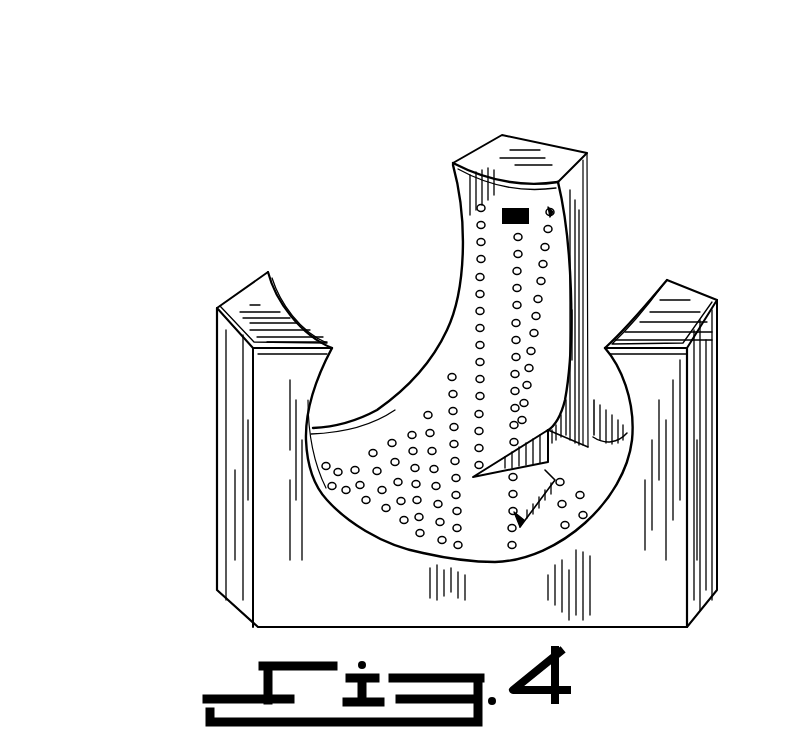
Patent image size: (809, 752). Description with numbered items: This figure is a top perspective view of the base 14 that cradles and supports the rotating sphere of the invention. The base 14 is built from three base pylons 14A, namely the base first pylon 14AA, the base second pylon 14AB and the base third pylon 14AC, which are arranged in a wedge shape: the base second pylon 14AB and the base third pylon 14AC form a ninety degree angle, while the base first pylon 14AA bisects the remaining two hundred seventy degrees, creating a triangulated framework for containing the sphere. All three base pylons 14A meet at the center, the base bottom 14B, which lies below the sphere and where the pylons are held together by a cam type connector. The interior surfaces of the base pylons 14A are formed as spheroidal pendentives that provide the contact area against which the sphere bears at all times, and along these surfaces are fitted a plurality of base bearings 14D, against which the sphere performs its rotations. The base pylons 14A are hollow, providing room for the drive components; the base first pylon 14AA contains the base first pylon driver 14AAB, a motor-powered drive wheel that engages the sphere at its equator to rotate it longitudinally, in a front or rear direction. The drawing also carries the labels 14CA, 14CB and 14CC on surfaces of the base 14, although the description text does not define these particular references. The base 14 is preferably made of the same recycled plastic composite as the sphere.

The base 14 is at (467, 49).
The base pylons 14A is at (641, 306).
The base first pylon 14AA is at (530, 157).
The base first pylon driver 14AAB is at (553, 213).
The base second pylon 14AB is at (262, 302).
The base third pylon 14AC is at (682, 302).
The base bottom 14B is at (460, 517).
The inner left wall of trough 14CA is at (358, 414).
The front face of block 14CB is at (466, 605).
The inner right wall of trough 14CC is at (594, 438).
The base bearings 14D is at (517, 292).